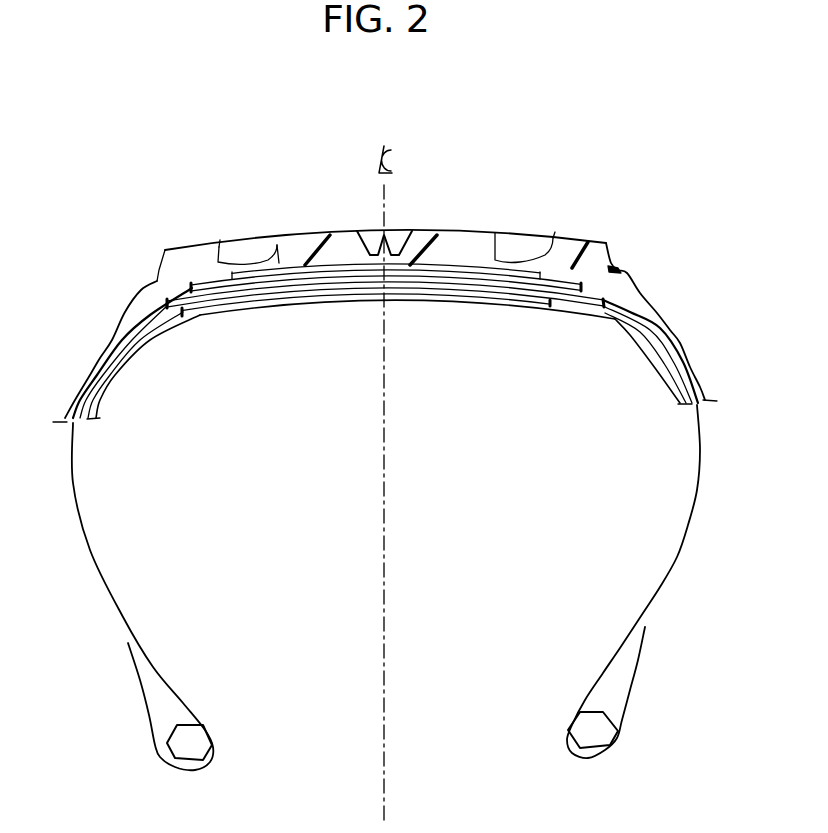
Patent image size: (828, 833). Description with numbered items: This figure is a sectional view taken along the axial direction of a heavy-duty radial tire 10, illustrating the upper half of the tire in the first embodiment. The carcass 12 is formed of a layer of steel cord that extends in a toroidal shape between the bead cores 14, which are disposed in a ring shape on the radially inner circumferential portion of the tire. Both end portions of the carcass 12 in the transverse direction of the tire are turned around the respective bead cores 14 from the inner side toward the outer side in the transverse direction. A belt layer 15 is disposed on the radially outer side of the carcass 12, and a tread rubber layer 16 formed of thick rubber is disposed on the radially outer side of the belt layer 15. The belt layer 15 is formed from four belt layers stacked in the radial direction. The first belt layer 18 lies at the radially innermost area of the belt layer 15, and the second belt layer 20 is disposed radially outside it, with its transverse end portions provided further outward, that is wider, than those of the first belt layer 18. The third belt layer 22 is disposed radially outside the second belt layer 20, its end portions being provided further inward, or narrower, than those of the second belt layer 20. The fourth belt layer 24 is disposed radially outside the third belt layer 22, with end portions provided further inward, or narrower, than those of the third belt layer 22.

The heavy-duty radial tire 10 is at (612, 219).
The carcass 12 is at (654, 351).
The bead core 14 is at (614, 746).
The belt layer 15 is at (630, 285).
The tread rubber layer 16 is at (451, 230).
The first belt layer 18 is at (556, 300).
The second belt layer 20 is at (609, 268).
The third belt layer 22 is at (216, 267).
The fourth belt layer 24 is at (279, 262).